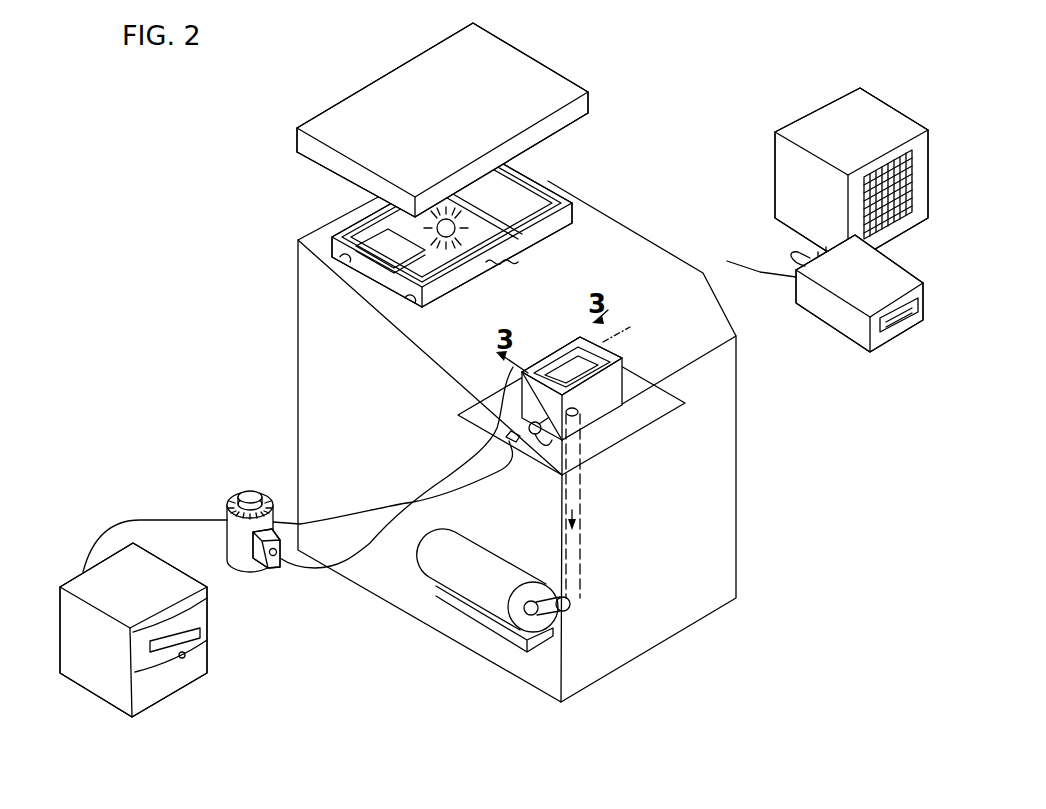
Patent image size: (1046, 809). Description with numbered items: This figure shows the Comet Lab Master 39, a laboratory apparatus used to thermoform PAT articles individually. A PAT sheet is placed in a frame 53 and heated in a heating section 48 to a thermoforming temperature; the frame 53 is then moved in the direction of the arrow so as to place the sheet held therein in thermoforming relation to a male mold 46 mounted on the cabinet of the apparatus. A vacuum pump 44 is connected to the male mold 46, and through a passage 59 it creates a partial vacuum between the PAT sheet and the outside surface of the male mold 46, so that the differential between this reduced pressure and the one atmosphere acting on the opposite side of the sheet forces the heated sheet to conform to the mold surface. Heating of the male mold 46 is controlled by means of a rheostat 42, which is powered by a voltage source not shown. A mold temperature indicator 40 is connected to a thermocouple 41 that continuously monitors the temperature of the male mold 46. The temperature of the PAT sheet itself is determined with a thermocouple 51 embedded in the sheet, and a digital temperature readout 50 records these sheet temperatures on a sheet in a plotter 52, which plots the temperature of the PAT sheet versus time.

The Comet Lab Master 39 is at (768, 535).
The mold temperature indicator 40 is at (186, 679).
The thermocouple 41 is at (548, 436).
The rheostat 42 is at (240, 568).
The vacuum pump 44 is at (480, 602).
The male mold 46 is at (606, 407).
The heating section 48 is at (605, 141).
The digital temperature readout 50 is at (842, 326).
The thermocouple 51 is at (466, 229).
The plotter 52 is at (860, 140).
The frame 53 is at (338, 222).
The passage 59 is at (577, 412).